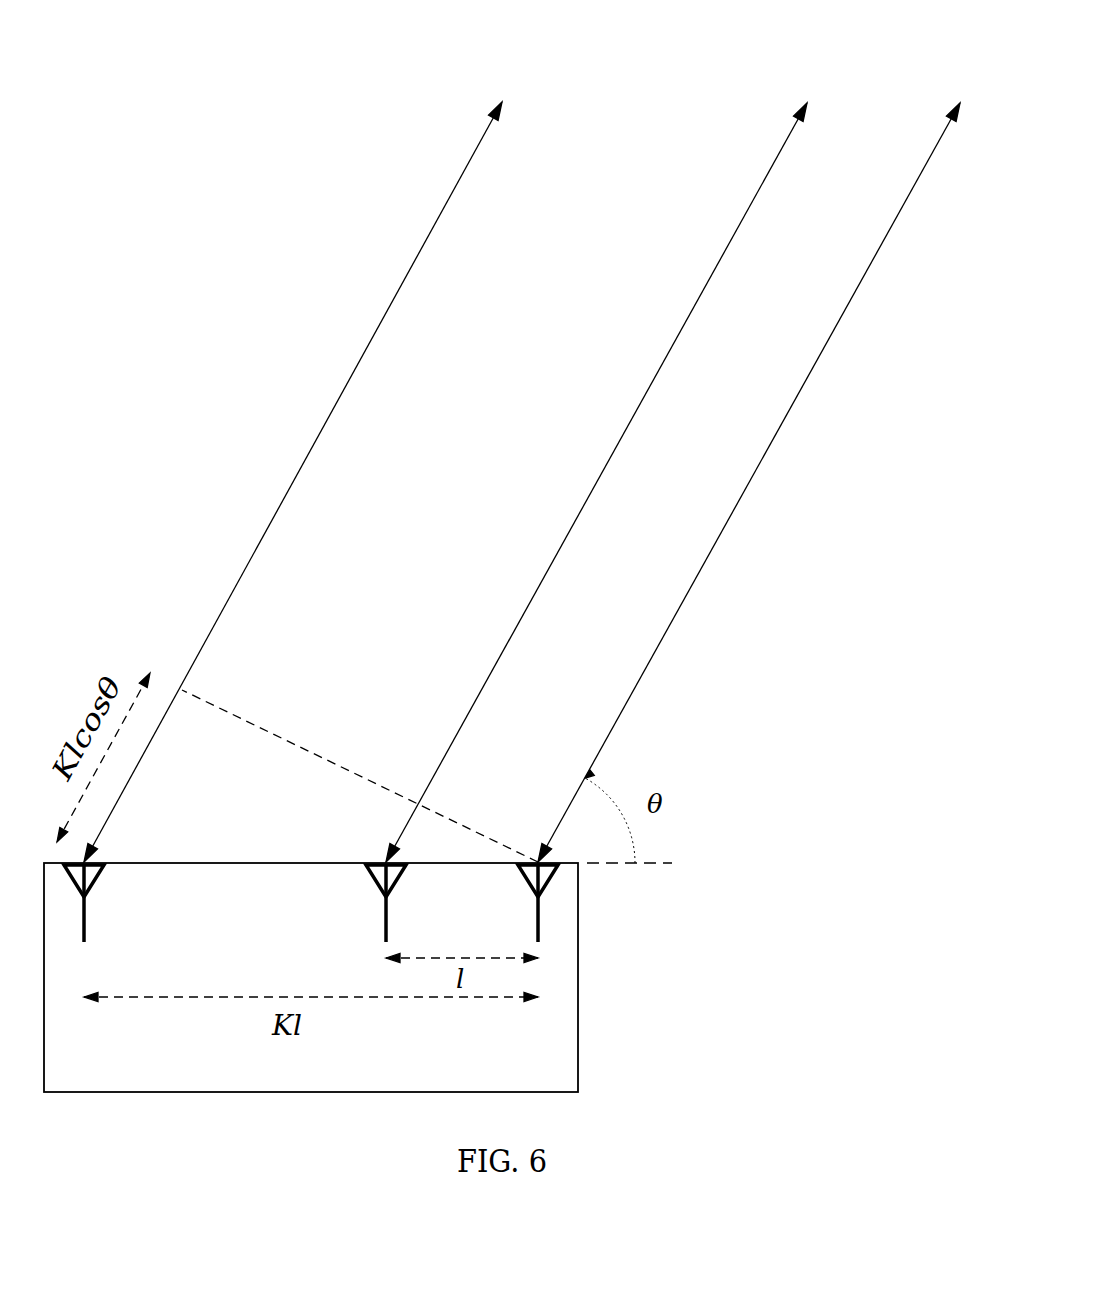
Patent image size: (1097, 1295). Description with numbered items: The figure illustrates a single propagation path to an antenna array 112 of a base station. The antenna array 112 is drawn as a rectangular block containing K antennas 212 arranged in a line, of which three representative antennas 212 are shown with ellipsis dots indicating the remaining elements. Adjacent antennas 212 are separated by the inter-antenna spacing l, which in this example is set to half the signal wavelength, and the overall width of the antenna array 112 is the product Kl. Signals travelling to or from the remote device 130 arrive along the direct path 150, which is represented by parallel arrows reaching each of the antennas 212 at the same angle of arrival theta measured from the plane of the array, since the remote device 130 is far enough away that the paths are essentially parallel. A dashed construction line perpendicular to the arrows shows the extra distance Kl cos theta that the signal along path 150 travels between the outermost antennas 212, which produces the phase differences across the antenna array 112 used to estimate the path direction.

The remote device 130 is at (769, 25).
The direct path 150 is at (781, 595).
The antenna array 112 is at (579, 1034).
The antennas 212 is at (91, 893).